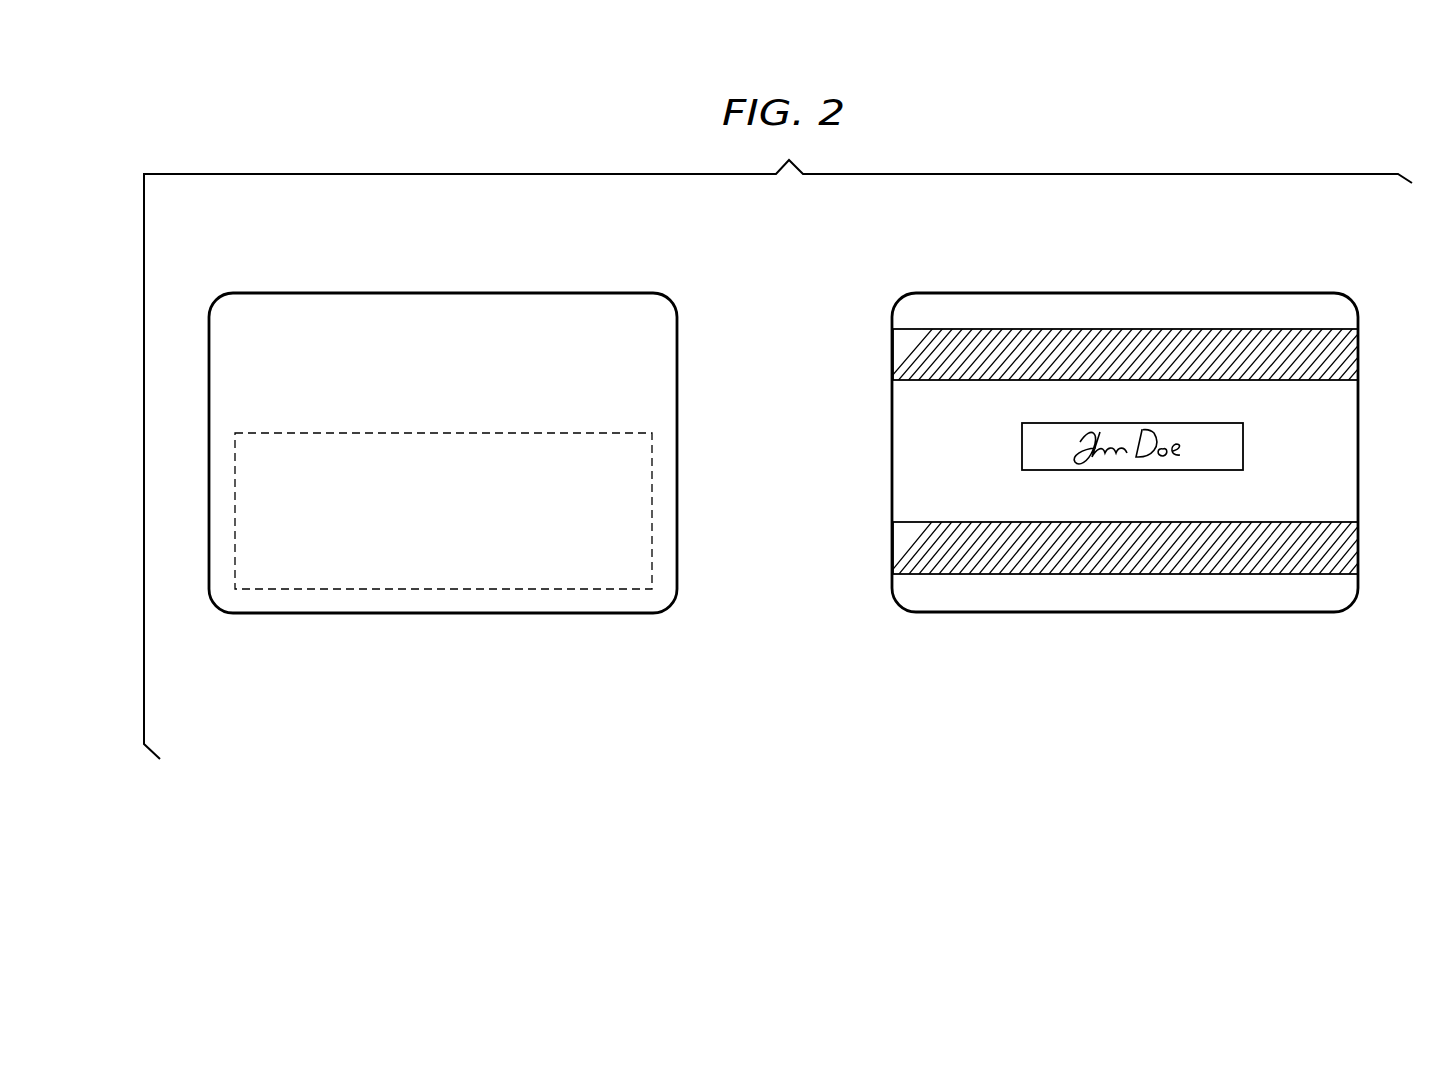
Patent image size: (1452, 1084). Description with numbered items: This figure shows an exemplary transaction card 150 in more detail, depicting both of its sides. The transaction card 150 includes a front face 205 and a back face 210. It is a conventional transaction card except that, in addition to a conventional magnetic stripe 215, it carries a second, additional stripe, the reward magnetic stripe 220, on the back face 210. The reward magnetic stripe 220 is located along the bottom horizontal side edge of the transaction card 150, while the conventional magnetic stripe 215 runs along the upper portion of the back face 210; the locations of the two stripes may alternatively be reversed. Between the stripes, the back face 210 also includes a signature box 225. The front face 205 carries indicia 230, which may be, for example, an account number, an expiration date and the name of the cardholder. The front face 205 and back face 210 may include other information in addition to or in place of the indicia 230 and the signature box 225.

The transaction card 150 is at (806, 658).
The front face 205 is at (580, 307).
The back face 210 is at (910, 450).
The conventional magnetic stripe 215 is at (906, 352).
The reward magnetic stripe 220 is at (908, 548).
The signature box 225 is at (1233, 442).
The indicia 230 is at (611, 432).